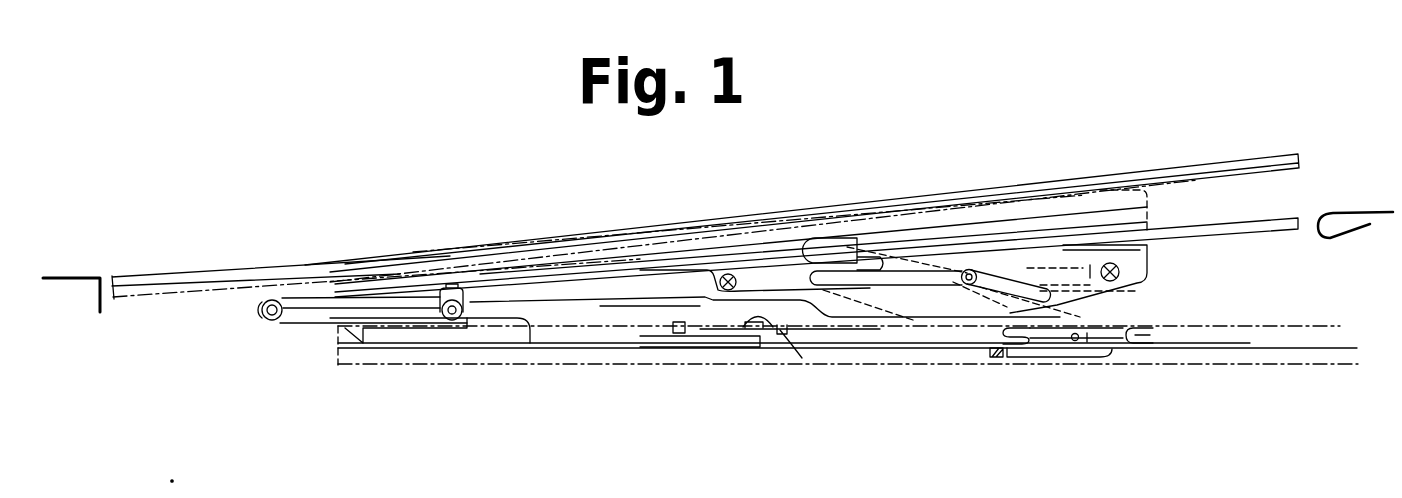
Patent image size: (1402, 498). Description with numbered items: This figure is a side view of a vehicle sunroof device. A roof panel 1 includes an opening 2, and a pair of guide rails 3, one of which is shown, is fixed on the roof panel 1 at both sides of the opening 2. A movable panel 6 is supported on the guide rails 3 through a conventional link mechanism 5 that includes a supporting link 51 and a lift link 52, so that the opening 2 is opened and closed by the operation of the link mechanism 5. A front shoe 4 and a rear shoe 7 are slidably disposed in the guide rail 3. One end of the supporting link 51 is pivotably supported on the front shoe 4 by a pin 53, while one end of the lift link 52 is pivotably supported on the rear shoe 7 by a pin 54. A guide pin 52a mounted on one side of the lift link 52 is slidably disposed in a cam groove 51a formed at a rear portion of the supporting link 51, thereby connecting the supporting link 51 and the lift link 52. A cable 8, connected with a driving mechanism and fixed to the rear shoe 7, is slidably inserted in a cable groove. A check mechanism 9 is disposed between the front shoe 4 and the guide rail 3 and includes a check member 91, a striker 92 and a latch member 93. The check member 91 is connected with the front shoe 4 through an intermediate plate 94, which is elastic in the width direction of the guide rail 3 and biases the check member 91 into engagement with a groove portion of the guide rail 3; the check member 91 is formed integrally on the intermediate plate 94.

The roof panel 1 is at (1335, 212).
The opening 2 is at (113, 283).
The guide rail 3 is at (551, 368).
The front shoe 4 is at (488, 333).
The link mechanism 5 is at (1163, 263).
The movable panel 6 is at (1192, 228).
The rear shoe 7 is at (1117, 335).
The cable 8 is at (1005, 362).
The check mechanism 9 is at (754, 356).
The supporting link 51 is at (648, 338).
The cam groove 51a is at (1140, 291).
The lift link 52 is at (1013, 287).
The guide pin 52a is at (1013, 287).
The pin 53 is at (270, 320).
The pin 54 is at (1076, 341).
The check member 91 is at (775, 345).
The striker 92 is at (680, 340).
The latch member 93 is at (825, 352).
The intermediate plate 94 is at (648, 292).